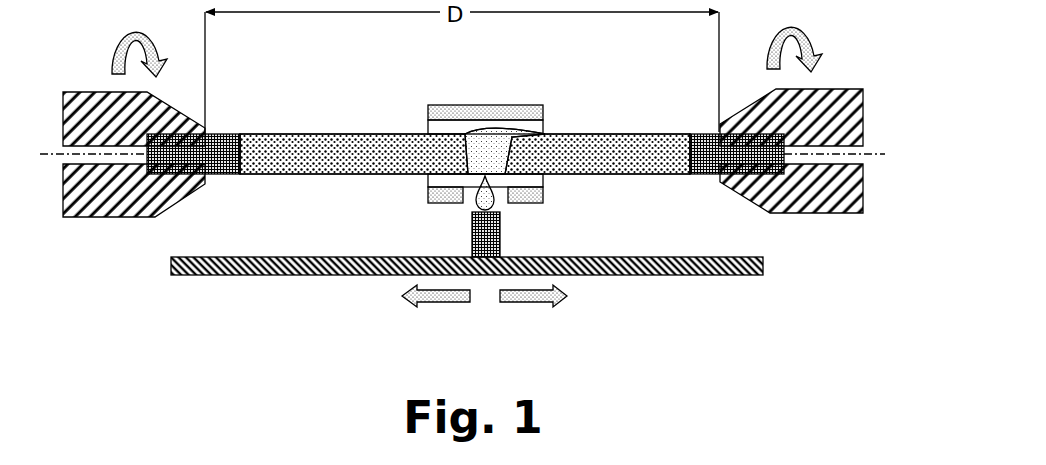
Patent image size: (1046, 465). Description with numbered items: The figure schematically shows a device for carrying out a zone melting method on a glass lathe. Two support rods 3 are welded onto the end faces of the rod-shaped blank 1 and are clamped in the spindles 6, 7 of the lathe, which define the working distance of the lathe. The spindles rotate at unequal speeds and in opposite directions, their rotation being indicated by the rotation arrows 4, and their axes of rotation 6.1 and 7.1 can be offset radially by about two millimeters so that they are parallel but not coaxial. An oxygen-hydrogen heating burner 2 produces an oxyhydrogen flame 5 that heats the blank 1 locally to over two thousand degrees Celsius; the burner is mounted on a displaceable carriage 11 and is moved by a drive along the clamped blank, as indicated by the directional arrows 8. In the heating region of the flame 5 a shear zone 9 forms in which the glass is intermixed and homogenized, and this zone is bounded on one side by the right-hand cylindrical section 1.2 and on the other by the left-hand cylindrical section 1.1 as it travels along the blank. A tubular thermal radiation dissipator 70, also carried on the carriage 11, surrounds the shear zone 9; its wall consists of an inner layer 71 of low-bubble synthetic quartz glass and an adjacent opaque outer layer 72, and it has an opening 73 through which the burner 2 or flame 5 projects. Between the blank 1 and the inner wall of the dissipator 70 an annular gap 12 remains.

The rod-shaped blank 1 is at (459, 105).
The left-hand cylindrical section 1.1 is at (328, 136).
The right-hand cylindrical section 1.2 is at (660, 133).
The oxygen-hydrogen heating burner 2 is at (472, 239).
The support rods 3 is at (217, 173).
The rotation arrows 4 is at (152, 50).
The oxyhydrogen flame 5 is at (496, 203).
The spindle 6 is at (118, 200).
The axis of rotation 6.1 is at (48, 157).
The spindle 7 is at (811, 196).
The axis of rotation 7.1 is at (48, 151).
The directional arrows 8 is at (432, 300).
The shear zone 9 is at (534, 129).
The displaceable carriage 11 is at (332, 277).
The annular gap 12 is at (428, 182).
The thermal radiation dissipator 70 is at (447, 130).
The inner layer 71 is at (428, 118).
The outer layer 72 is at (430, 106).
The opening 73 is at (433, 201).